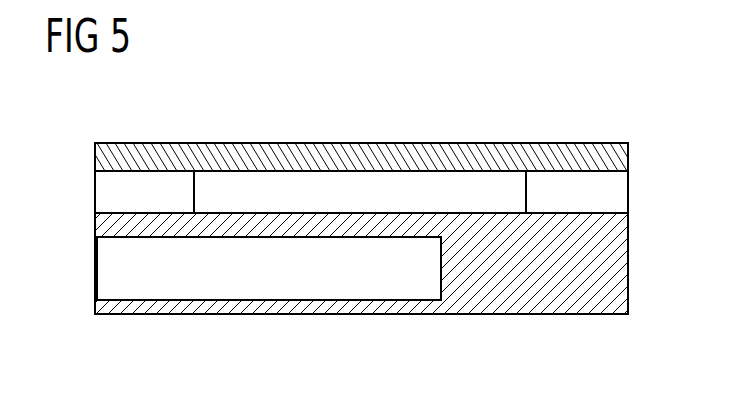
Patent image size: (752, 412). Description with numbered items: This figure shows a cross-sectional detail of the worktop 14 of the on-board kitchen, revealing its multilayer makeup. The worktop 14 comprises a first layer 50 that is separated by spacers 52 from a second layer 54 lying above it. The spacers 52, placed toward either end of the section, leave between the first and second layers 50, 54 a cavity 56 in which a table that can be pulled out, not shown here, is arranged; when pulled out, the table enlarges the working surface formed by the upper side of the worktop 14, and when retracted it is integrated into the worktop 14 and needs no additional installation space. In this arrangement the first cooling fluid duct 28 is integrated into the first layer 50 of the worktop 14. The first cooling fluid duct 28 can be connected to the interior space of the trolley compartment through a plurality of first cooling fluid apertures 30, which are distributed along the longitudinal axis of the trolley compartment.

The worktop 14 is at (558, 105).
The first cooling fluid duct 28 is at (380, 287).
The first cooling fluid apertures 30 is at (267, 310).
The first layer 50 is at (537, 303).
The spacers 52 is at (110, 193).
The second layer 54 is at (468, 150).
The channel 56 is at (357, 181).